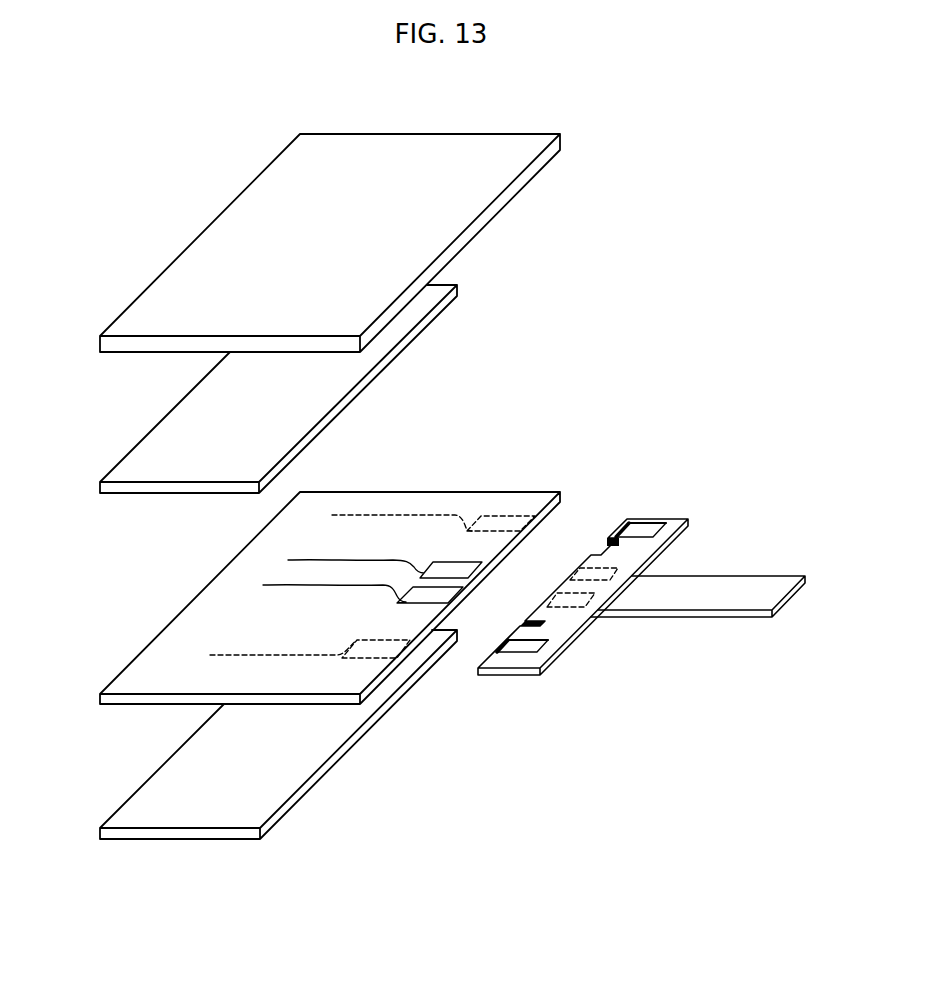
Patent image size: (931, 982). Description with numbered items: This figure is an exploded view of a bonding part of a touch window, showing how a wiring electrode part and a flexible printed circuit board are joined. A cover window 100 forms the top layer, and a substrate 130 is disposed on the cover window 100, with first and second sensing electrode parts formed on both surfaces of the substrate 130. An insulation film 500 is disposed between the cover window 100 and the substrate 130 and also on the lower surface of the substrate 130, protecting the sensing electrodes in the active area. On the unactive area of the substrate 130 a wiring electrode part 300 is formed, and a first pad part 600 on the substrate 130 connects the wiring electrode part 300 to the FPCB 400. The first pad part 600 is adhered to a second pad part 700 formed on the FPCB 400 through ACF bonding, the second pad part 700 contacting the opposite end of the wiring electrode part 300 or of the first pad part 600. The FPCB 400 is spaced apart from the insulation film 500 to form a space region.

The cover window 100 is at (515, 146).
The insulation film 500 is at (128, 470).
The substrate 130 is at (133, 678).
The wiring electrode part 300 is at (407, 520).
The first pad part 600 is at (505, 527).
The second pad part 700 is at (647, 516).
The FPCB 400 is at (767, 590).